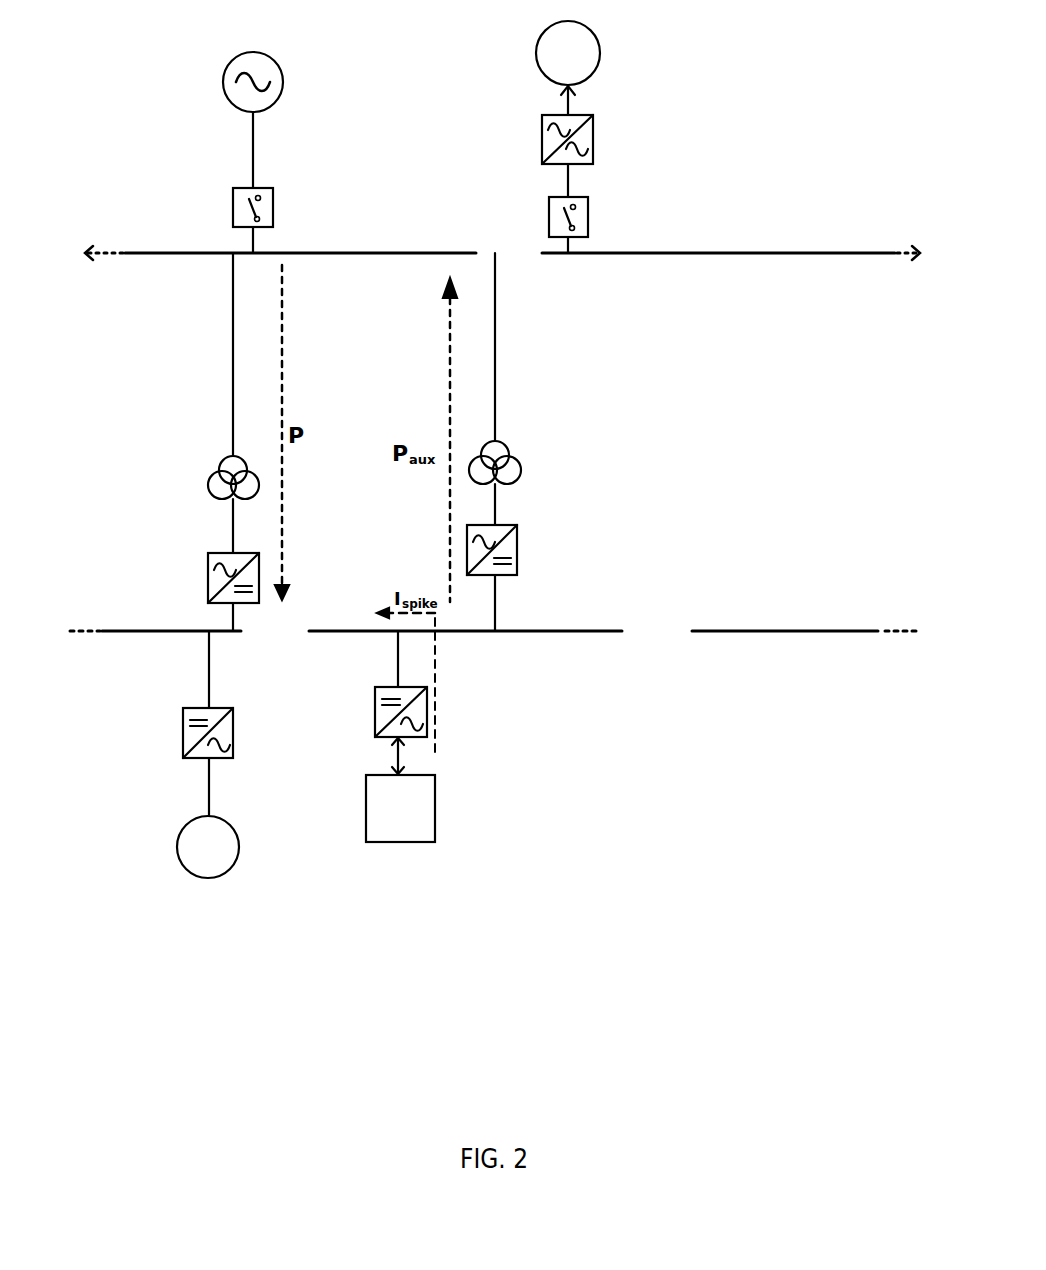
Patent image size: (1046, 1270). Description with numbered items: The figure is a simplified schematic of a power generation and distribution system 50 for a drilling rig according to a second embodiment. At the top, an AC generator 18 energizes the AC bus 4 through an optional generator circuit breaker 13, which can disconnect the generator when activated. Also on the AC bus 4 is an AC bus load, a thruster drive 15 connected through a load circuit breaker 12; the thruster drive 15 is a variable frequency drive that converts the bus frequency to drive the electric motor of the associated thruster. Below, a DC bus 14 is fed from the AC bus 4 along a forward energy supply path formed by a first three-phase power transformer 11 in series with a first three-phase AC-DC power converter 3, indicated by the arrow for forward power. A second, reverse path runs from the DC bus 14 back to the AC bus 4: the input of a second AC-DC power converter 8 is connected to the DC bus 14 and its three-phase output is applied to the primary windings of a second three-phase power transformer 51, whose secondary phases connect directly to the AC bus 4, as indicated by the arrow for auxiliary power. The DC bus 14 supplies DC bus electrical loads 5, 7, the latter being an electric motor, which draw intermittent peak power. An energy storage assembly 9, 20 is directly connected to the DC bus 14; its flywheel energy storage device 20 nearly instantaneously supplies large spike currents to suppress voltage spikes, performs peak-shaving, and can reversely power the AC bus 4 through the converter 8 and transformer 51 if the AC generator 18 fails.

The first three-phase AC-DC power converter 3 is at (201, 570).
The AC bus 4 is at (502, 270).
The DC bus electrical load 5 is at (183, 723).
The DC bus electrical load 7 is at (180, 847).
The second three-phase AC-DC power converter 8 is at (518, 578).
The energy storage assembly converter 9 is at (376, 702).
The first three-phase power transformer 11 is at (208, 494).
The load circuit breaker 12 is at (587, 215).
The generator circuit breaker 13 is at (272, 215).
The DC bus 14 is at (495, 647).
The thruster drive 15 is at (592, 109).
The AC generator 18 is at (224, 120).
The flywheel energy storage device 20 is at (373, 808).
The power generation and distribution system 50 is at (187, 983).
The second three-phase power transformer 51 is at (514, 481).